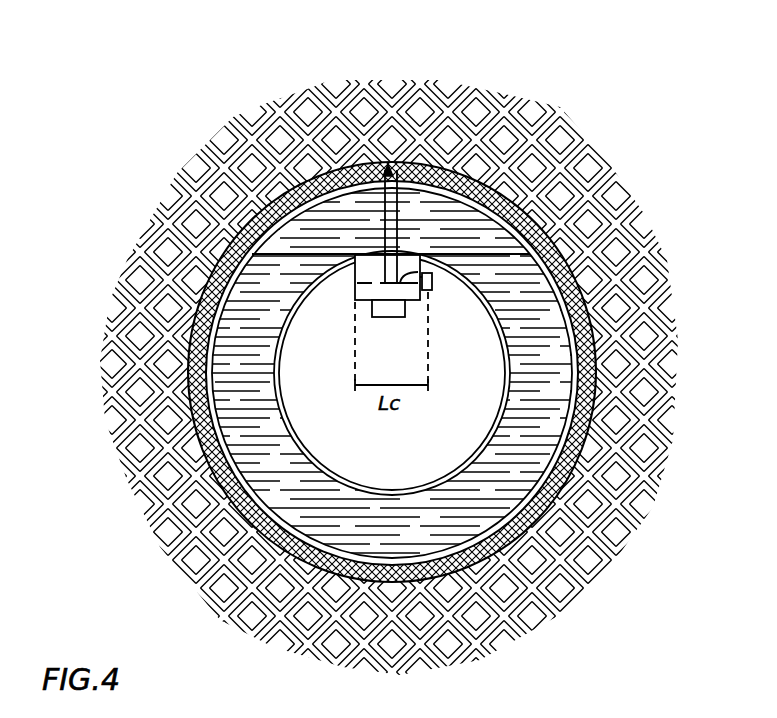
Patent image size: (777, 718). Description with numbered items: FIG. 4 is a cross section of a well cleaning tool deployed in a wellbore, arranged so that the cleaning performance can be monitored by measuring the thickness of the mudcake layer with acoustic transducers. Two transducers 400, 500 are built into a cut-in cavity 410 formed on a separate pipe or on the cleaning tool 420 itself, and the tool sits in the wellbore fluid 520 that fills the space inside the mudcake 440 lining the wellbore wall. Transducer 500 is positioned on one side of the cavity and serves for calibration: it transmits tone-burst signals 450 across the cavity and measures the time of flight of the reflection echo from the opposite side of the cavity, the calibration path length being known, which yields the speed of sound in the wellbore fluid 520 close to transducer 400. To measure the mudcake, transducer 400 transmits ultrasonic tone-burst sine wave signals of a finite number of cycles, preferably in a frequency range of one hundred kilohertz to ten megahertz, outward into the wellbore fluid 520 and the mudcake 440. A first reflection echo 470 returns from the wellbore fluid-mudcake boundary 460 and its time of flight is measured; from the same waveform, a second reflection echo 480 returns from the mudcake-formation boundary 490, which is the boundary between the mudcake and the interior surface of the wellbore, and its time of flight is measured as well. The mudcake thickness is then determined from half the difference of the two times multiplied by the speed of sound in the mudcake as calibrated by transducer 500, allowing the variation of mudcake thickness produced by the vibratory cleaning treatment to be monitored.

The transducer 400 is at (388, 318).
The cut-in cavity 410 is at (352, 283).
The cleaning tool 420 is at (510, 362).
The mudcake 440 is at (362, 192).
The tone-burst signals 450 is at (420, 258).
The wellbore fluid-mudcake boundary 460 is at (333, 193).
The first reflection echo 470 is at (400, 228).
The second reflection echo 480 is at (393, 177).
The mudcake-formation boundary 490 is at (340, 173).
The transducer 500 is at (433, 290).
The wellbore fluid 520 is at (287, 188).